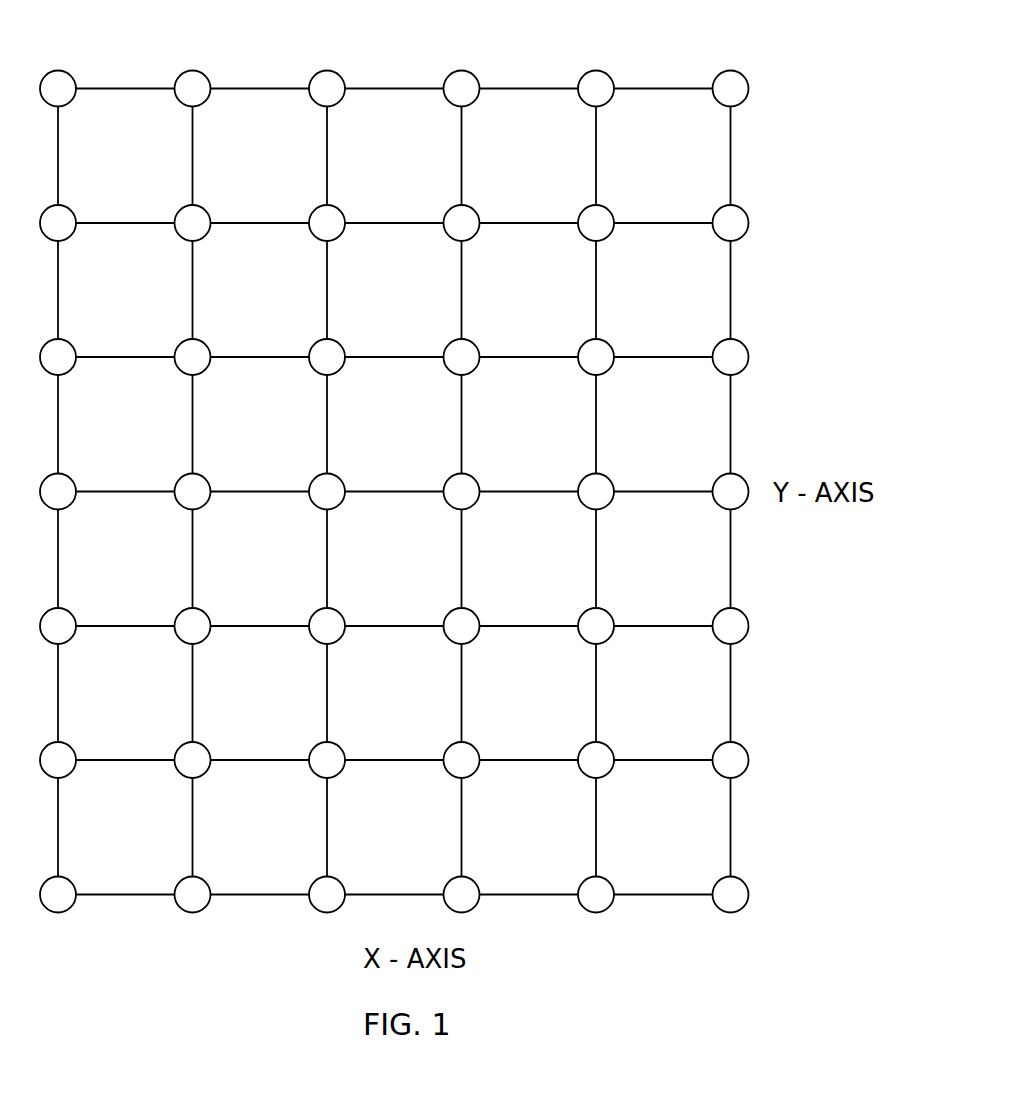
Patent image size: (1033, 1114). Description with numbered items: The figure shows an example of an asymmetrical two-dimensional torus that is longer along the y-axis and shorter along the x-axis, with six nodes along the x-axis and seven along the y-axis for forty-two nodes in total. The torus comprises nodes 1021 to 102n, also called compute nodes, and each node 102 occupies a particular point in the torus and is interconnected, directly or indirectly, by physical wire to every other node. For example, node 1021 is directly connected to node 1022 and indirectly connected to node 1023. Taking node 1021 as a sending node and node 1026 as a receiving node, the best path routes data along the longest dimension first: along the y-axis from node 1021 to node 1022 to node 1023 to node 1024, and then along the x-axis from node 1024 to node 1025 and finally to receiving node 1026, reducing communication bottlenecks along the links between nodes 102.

The node 102 is at (406, 456).
The node 1021 is at (206, 743).
The node 1022 is at (206, 609).
The node 1023 is at (206, 474).
The node 1024 is at (206, 340).
The node 1025 is at (341, 340).
The node 1026 is at (476, 340).
The node 102n is at (729, 70).